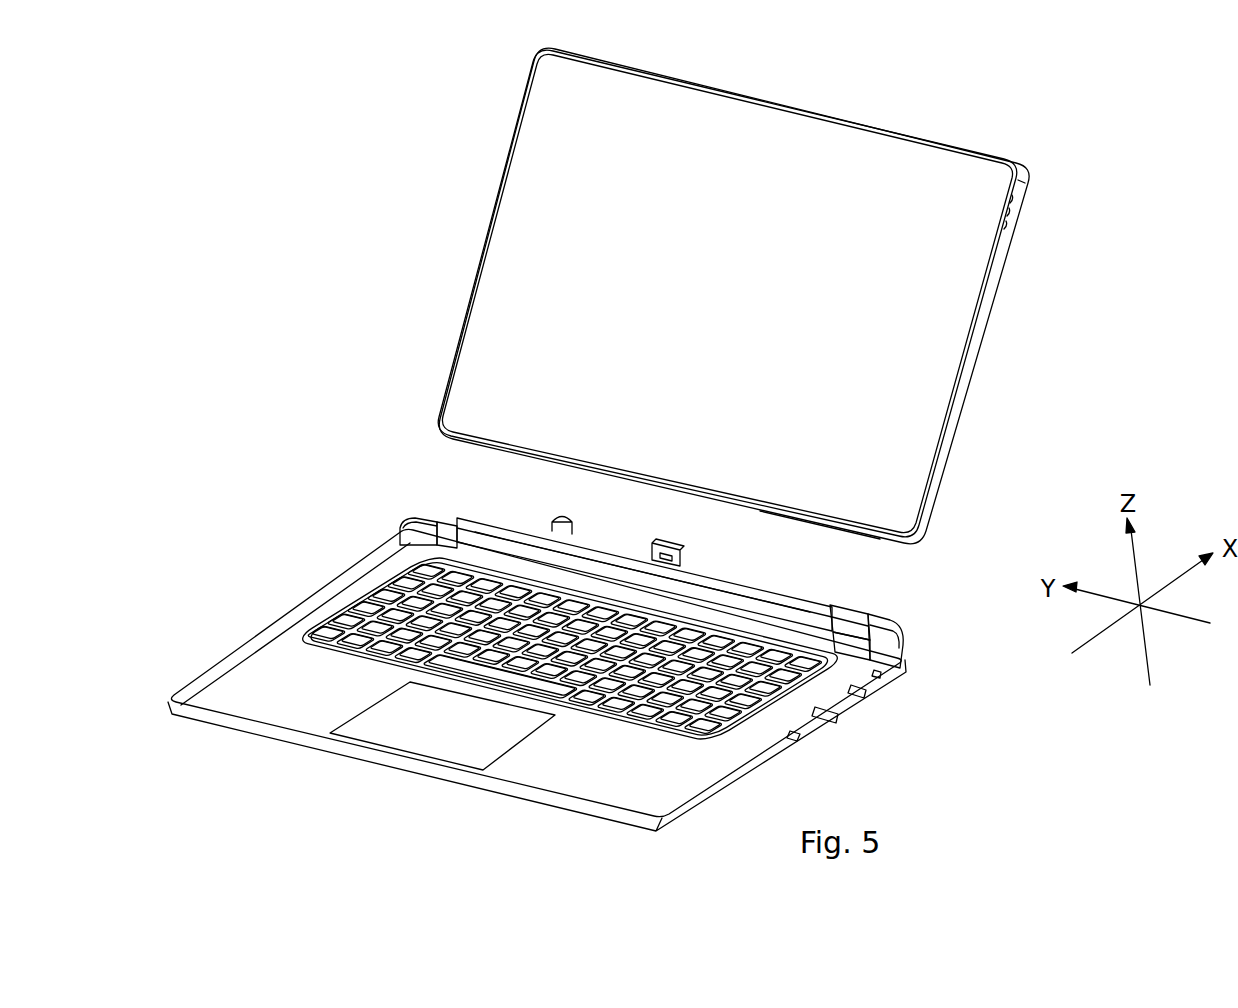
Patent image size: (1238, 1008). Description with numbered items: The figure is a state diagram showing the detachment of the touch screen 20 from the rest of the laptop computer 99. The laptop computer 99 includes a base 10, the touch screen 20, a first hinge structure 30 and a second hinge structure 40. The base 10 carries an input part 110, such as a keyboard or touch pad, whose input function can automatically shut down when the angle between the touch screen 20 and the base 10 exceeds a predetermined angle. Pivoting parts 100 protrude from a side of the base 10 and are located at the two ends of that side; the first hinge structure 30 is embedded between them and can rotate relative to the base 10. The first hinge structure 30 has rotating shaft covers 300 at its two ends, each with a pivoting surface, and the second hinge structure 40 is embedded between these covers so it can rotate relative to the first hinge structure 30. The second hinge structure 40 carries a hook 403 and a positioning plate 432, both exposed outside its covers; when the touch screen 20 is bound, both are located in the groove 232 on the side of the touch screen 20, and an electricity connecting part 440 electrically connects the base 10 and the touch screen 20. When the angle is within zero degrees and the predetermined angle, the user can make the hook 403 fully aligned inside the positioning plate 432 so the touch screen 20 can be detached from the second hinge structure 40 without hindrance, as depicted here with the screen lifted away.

The laptop computer 99 is at (133, 78).
The base 10 is at (227, 584).
The touch screen 20 is at (440, 252).
The first hinge structure 30 is at (830, 625).
The second hinge structure 40 is at (644, 555).
The pivoting part 100 is at (415, 522).
The input part 110 is at (413, 650).
The groove 232 is at (824, 547).
The rotating shaft cover 300 is at (455, 525).
The hook 403 is at (575, 533).
The positioning plate 432 is at (553, 524).
The electricity connecting part 440 is at (660, 548).